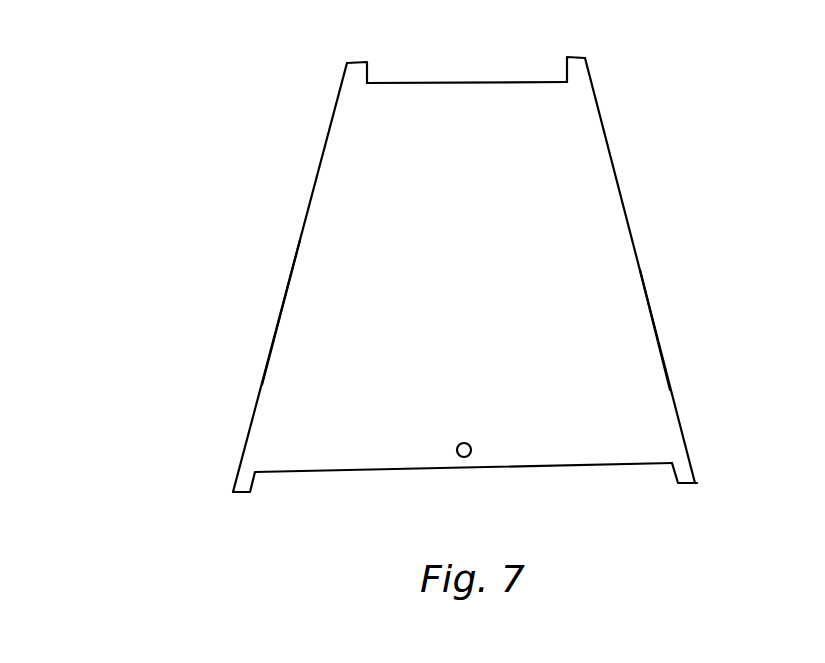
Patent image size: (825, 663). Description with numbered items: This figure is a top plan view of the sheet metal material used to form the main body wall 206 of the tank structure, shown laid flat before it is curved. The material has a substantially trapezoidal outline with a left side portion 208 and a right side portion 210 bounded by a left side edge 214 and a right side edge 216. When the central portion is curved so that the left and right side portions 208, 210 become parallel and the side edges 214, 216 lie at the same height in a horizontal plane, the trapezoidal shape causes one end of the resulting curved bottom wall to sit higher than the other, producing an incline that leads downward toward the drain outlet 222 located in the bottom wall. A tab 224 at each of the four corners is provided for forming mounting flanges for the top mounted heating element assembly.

The main body wall 206 is at (673, 150).
The left side portion 208 is at (315, 233).
The right side portion 210 is at (610, 237).
The left side edge 214 is at (272, 335).
The right side edge 216 is at (650, 305).
The drain outlet 222 is at (470, 444).
The tab 224 is at (345, 70).